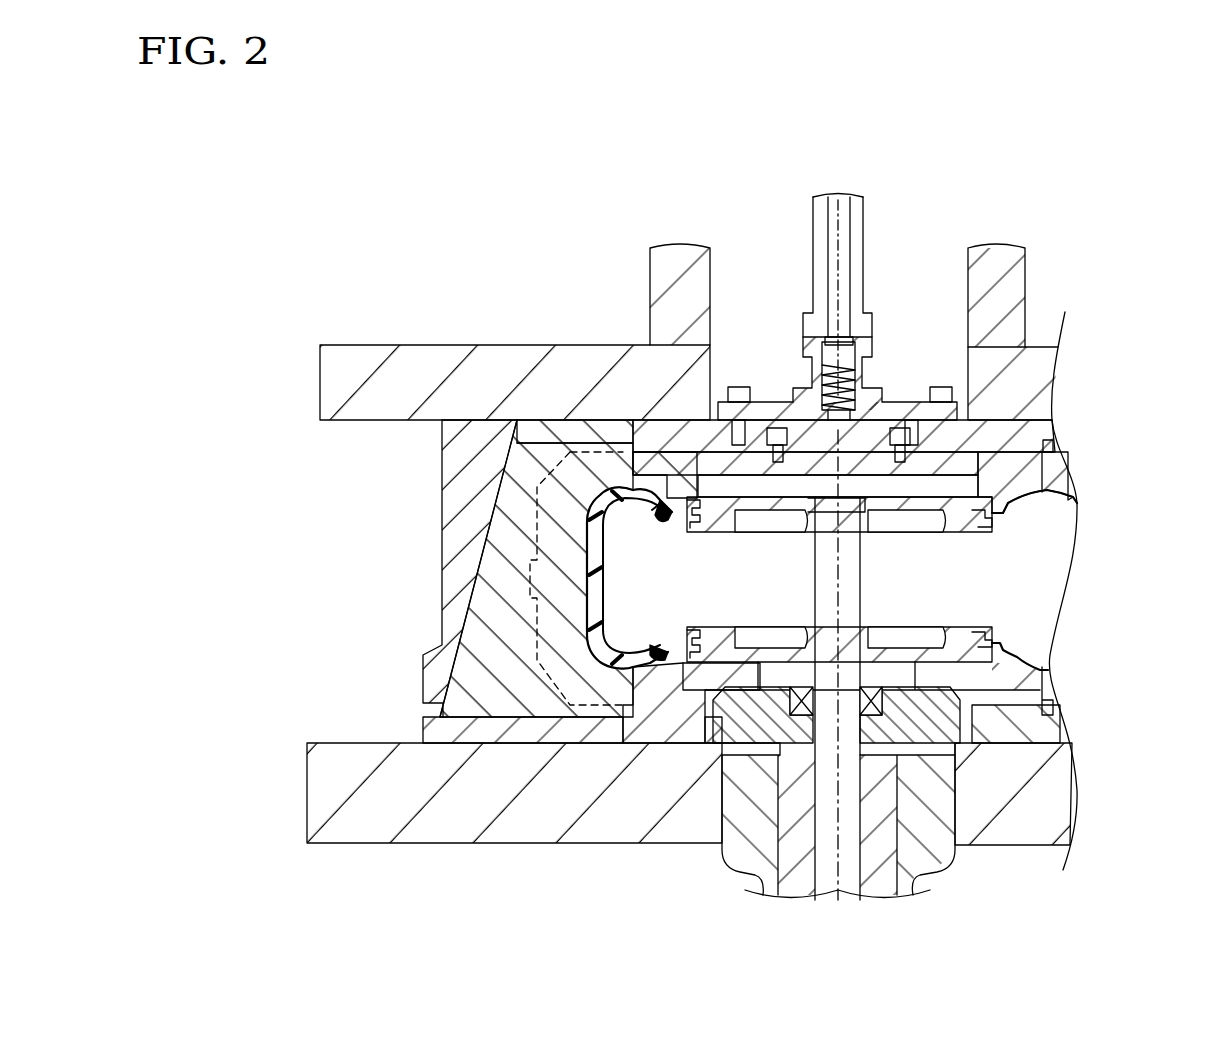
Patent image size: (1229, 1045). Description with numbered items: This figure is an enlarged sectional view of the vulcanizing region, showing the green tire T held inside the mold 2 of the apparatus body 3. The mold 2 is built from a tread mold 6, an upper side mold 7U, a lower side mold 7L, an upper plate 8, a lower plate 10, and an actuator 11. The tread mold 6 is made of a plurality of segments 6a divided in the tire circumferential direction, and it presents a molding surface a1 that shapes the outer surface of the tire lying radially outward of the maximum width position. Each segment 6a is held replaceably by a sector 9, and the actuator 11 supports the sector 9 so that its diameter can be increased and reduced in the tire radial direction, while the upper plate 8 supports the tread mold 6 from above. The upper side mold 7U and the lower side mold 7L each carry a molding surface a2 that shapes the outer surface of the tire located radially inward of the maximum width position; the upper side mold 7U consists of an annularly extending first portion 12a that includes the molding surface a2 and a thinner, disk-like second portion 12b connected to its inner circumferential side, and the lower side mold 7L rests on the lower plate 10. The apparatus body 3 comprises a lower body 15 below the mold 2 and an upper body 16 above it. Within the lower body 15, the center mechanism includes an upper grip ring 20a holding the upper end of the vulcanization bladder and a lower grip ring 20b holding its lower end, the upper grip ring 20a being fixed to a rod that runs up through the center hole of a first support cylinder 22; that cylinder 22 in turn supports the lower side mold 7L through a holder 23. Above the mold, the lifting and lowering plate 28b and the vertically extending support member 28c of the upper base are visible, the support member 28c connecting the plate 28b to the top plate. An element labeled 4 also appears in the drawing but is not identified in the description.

The mold 2 is at (226, 222).
The apparatus body 3 is at (290, 795).
The center mechanism 4 is at (795, 370).
The tread mold 6 is at (525, 658).
The segment 6a is at (565, 640).
The upper side mold 7U is at (594, 258).
The lower side mold 7L is at (667, 690).
The upper plate 8 is at (543, 430).
The sector 9 is at (510, 545).
The lower plate 10 is at (590, 728).
The actuator 11 is at (470, 485).
The first portion 12a is at (575, 445).
The second portion 12b is at (650, 477).
The lower body 15 is at (418, 852).
The upper body 16 is at (440, 312).
The upper grip ring 20a is at (967, 530).
The lower grip ring 20b is at (948, 652).
The first support cylinder 22 is at (873, 850).
The holder 23 is at (957, 745).
The lifting and lowering plate 28b is at (1010, 388).
The support member 28c is at (1000, 290).
The green tire T is at (598, 590).
The molding surface a1 is at (603, 602).
The molding surface a2 is at (650, 512).